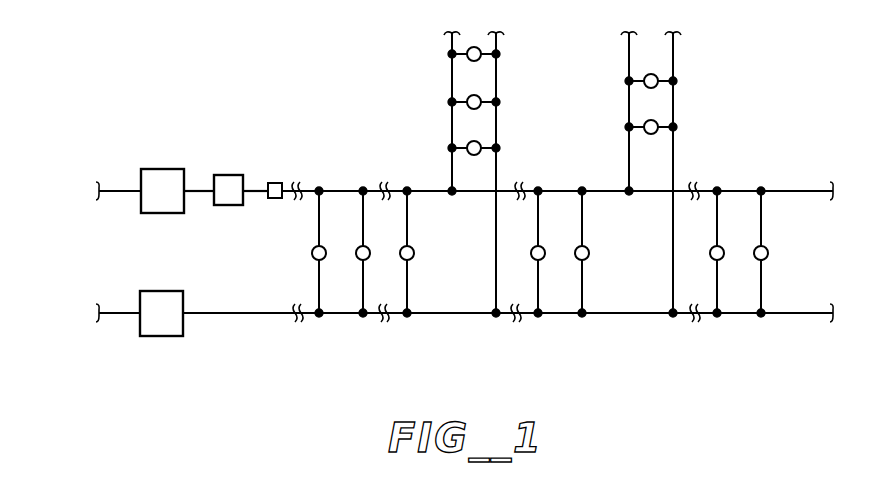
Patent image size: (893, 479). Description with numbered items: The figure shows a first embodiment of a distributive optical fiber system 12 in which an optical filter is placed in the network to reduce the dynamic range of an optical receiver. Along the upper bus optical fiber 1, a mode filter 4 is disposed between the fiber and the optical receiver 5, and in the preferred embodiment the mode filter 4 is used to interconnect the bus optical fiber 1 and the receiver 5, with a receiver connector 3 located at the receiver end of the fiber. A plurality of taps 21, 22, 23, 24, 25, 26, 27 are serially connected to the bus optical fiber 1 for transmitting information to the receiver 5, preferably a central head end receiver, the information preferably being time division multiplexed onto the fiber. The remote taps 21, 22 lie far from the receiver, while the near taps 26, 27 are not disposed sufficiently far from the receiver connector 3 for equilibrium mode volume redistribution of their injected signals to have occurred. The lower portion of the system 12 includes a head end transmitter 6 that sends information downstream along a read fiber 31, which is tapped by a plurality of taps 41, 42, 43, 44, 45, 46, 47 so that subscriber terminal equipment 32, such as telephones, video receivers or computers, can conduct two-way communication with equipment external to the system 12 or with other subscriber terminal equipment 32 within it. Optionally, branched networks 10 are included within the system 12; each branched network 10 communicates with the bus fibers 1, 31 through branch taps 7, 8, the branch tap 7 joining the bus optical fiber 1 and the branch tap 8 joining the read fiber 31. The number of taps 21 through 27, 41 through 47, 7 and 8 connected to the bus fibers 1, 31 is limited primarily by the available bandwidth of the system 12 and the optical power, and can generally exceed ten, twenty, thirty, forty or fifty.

The bus optical fiber 1 is at (808, 190).
The receiver connector 3 is at (270, 212).
The mode filter 4 is at (235, 189).
The optical receiver 5 is at (159, 189).
The head end transmitter 6 is at (159, 319).
The branch tap 7 is at (451, 197).
The branch tap 8 is at (492, 316).
The branched network 10 is at (452, 98).
The distributive optical fiber system 12 is at (267, 88).
The tap 21 is at (761, 191).
The tap 22 is at (717, 191).
The tap 23 is at (582, 191).
The tap 24 is at (538, 191).
The tap 25 is at (407, 191).
The tap 26 is at (363, 191).
The tap 27 is at (319, 191).
The read fiber 31 is at (808, 316).
The subscriber terminal equipment 32 is at (307, 257).
The tap 41 is at (761, 313).
The tap 42 is at (717, 313).
The tap 43 is at (582, 313).
The tap 44 is at (538, 313).
The tap 45 is at (407, 313).
The tap 46 is at (363, 313).
The tap 47 is at (319, 313).